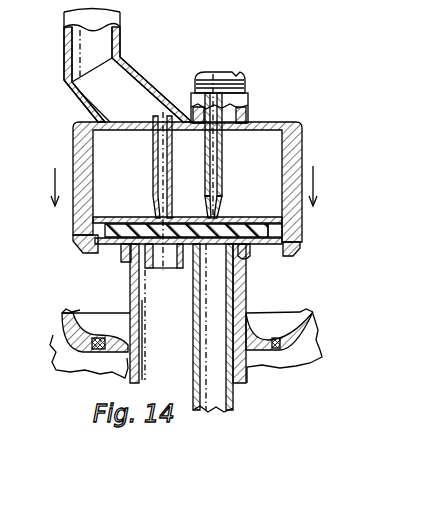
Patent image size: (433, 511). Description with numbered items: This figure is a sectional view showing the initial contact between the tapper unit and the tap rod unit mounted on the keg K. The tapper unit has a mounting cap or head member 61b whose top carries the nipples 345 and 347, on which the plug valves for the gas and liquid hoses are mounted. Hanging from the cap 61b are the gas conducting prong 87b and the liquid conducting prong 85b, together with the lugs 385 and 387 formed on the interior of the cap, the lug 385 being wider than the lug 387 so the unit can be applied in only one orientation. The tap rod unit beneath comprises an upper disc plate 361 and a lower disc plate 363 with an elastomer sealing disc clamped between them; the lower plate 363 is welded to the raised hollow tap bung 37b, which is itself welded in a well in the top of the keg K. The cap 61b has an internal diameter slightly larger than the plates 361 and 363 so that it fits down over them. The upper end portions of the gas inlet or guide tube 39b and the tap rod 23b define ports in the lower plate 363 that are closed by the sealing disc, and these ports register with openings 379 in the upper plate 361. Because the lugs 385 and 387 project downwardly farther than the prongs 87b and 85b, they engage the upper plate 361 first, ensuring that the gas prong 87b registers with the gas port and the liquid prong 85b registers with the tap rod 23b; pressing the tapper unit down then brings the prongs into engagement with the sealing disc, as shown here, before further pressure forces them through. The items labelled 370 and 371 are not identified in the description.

The nipple 345 is at (130, 69).
The nipple 347 is at (252, 85).
The liquid conducting prong 85b is at (224, 158).
The mounting cap or head member 61b is at (302, 157).
The gas conducting prong 87b is at (153, 176).
The upper disc plate 361 is at (130, 217).
The openings 379 is at (210, 212).
The seal band 370 is at (250, 218).
The lug 385 is at (80, 246).
The support 371 is at (125, 251).
The gas inlet or guide tube 39b is at (163, 265).
The lug 387 is at (296, 245).
The lower disc plate 363 is at (260, 245).
The raised hollow tap bung 37b is at (247, 289).
The keg K is at (314, 338).
The tap rod 23b is at (234, 398).